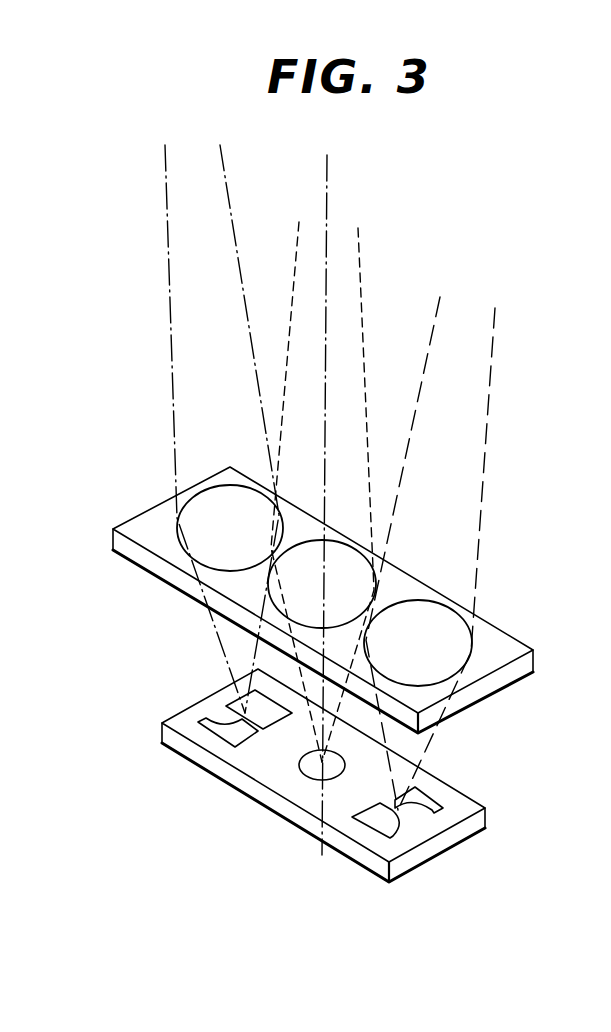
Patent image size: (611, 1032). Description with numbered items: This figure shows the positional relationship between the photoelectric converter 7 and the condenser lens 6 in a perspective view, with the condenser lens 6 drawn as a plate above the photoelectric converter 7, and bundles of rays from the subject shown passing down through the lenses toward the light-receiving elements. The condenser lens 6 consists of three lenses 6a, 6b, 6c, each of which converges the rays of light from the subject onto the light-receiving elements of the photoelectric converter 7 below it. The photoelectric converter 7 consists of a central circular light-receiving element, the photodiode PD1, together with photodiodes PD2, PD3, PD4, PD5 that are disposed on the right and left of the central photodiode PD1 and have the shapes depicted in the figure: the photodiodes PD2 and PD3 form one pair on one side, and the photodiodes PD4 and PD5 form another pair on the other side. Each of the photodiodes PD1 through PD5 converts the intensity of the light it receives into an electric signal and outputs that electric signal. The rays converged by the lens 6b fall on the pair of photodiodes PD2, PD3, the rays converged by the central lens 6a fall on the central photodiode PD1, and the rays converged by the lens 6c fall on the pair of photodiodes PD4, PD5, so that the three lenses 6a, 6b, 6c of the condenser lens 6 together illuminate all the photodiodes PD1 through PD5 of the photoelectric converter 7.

The condenser lens 6 is at (122, 544).
The lens 6a is at (357, 570).
The lens 6b is at (197, 514).
The lens 6c is at (448, 627).
The photoelectric converter 7 is at (180, 747).
The central circular light-receiving element (photodiode) PD1 is at (303, 777).
The photodiode PD2 is at (255, 702).
The photodiode PD3 is at (207, 718).
The photodiode PD4 is at (420, 797).
The photodiode PD5 is at (373, 820).